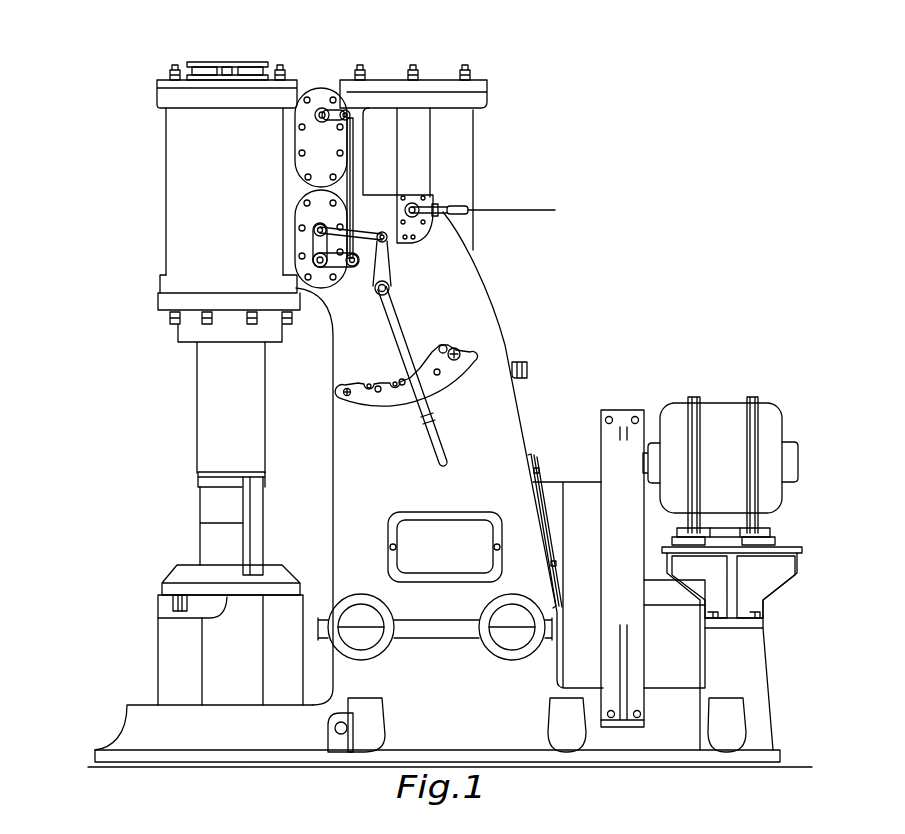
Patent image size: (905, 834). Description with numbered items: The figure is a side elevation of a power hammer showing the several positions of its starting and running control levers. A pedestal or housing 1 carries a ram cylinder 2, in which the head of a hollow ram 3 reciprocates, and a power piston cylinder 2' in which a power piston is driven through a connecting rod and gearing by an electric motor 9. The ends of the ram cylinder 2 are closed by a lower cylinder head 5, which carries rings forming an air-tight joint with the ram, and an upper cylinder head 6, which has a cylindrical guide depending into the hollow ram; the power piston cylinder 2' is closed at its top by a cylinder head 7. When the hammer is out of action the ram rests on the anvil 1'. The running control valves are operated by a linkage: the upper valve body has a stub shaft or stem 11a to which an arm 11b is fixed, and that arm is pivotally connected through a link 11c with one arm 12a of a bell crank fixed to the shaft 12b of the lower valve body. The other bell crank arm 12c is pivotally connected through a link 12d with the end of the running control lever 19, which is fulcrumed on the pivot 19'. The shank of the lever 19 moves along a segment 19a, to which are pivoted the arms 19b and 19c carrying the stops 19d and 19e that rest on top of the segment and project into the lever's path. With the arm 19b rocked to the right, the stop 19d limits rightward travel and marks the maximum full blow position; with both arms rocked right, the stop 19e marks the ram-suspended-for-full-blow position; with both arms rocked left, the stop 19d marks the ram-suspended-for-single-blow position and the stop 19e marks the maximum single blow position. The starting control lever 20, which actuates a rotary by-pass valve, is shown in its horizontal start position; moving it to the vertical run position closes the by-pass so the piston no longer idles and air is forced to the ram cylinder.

The pedestal or housing 1 is at (450, 489).
The anvil 1' is at (210, 650).
The ram cylinder 2 is at (202, 191).
The power piston cylinder 2' is at (405, 188).
The hollow ram 3 is at (207, 395).
The cylinder head 5 is at (162, 303).
The cylinder head 6 is at (163, 85).
The cylinder head 7 is at (475, 83).
The electric motor 9 is at (693, 475).
The stub shaft or stem 11a is at (323, 110).
The arm 11b is at (347, 112).
The link 11c is at (352, 153).
The bell crank arm 12a is at (345, 266).
The shaft 12b is at (320, 266).
The bell crank arm 12c is at (318, 247).
The link 12d is at (364, 231).
The running control lever 19 is at (423, 353).
The pivot 19' is at (416, 281).
The segment 19a is at (382, 401).
The arm 19b is at (443, 345).
The arm 19c is at (398, 371).
The stop 19d is at (451, 350).
The stop 19e is at (400, 377).
The starting control lever 20 is at (460, 206).